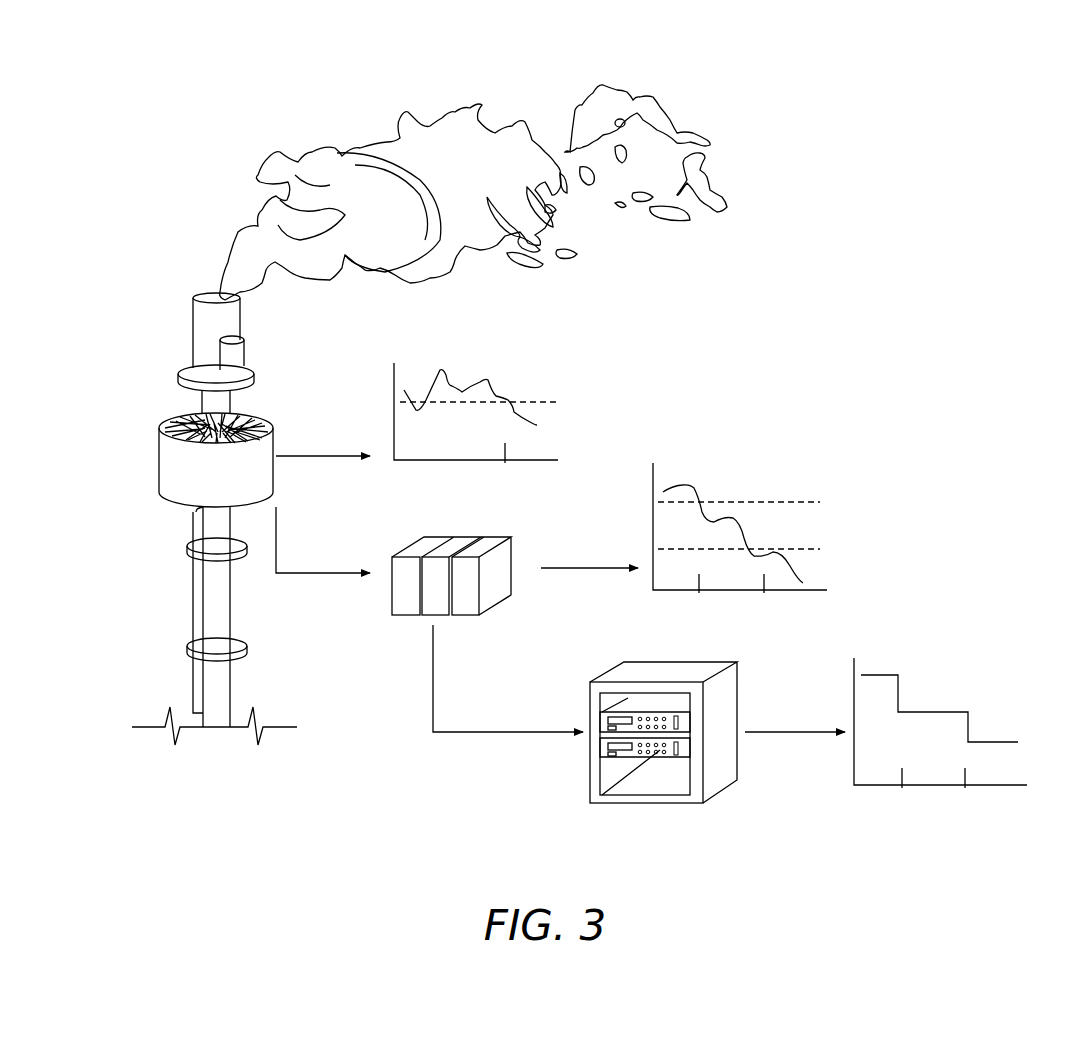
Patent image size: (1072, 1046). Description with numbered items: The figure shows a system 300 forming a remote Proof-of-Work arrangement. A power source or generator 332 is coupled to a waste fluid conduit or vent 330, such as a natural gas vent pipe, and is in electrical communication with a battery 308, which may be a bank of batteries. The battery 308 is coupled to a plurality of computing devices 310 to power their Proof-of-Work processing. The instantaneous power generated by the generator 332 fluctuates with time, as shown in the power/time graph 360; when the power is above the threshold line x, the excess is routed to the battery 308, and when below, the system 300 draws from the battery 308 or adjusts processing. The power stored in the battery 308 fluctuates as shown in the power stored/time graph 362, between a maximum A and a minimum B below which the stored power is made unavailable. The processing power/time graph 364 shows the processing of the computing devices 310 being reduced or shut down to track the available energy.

The system 300 is at (304, 50).
The battery 308 is at (390, 608).
The computing devices 310 is at (690, 721).
The waste fluid conduit or vent 330 is at (203, 612).
The generator 332 is at (160, 470).
The power/time graph 360 is at (543, 356).
The power stored/time graph 362 is at (813, 458).
The processing power/time graph 364 is at (982, 666).